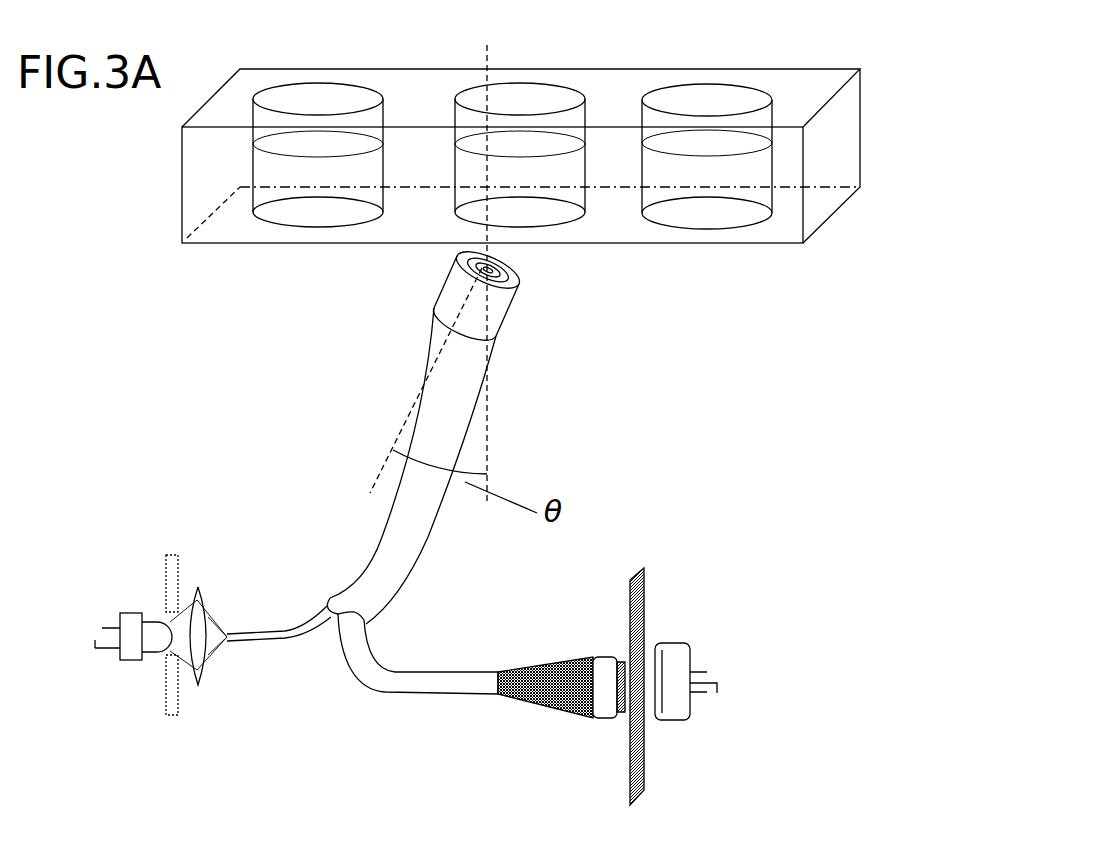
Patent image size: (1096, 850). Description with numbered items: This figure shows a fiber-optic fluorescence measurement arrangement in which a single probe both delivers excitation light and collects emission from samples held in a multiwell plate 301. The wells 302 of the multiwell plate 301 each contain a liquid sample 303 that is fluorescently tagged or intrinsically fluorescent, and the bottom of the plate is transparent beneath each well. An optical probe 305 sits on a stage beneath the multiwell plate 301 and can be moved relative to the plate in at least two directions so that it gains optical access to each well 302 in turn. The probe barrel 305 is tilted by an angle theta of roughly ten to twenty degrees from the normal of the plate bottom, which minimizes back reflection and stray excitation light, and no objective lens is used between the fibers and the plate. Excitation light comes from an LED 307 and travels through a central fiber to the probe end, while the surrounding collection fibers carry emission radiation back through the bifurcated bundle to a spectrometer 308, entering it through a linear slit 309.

The multiwell plate 301 is at (830, 145).
The wells 302 is at (682, 98).
The liquid sample 303 is at (672, 192).
The optical probe 305 is at (505, 323).
The LED 307 is at (128, 610).
The spectrometer 308 is at (685, 645).
The linear slit 309 is at (642, 645).